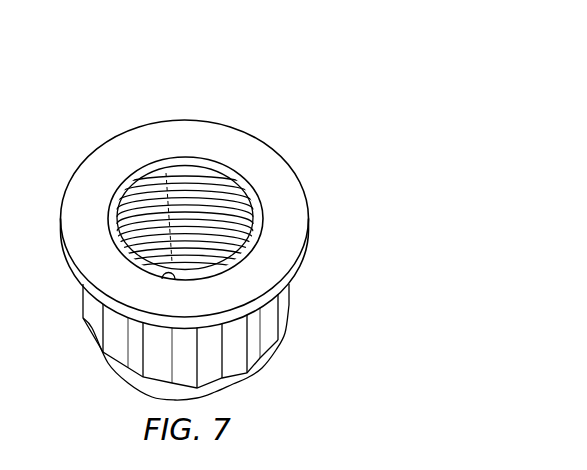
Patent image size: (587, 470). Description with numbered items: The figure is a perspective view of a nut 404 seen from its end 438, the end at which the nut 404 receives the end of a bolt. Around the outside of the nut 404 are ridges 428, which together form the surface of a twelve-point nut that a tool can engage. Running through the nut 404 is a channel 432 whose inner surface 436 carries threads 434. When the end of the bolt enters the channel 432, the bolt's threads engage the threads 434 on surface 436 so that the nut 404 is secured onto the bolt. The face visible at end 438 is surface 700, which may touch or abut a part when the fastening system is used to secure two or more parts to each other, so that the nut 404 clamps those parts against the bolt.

The surface 700 is at (174, 227).
The nut 404 is at (185, 177).
The channel 432 is at (155, 170).
The threads 434 is at (212, 188).
The surface 436 is at (175, 279).
The end 438 is at (90, 155).
The ridges 428 is at (145, 367).